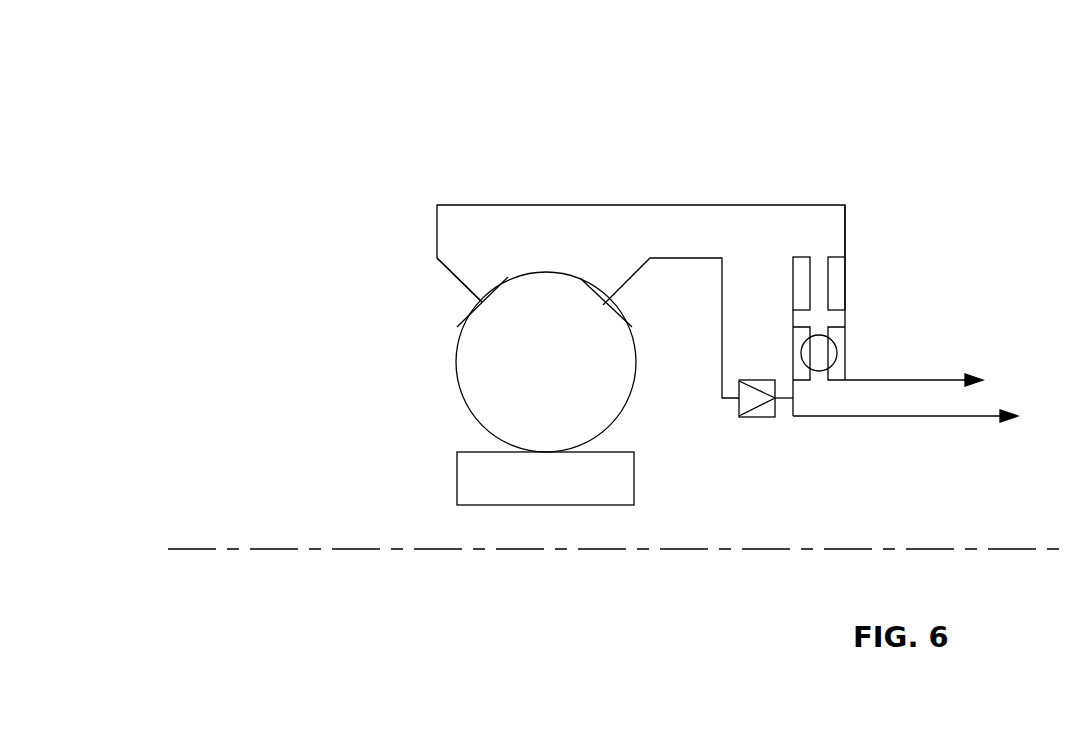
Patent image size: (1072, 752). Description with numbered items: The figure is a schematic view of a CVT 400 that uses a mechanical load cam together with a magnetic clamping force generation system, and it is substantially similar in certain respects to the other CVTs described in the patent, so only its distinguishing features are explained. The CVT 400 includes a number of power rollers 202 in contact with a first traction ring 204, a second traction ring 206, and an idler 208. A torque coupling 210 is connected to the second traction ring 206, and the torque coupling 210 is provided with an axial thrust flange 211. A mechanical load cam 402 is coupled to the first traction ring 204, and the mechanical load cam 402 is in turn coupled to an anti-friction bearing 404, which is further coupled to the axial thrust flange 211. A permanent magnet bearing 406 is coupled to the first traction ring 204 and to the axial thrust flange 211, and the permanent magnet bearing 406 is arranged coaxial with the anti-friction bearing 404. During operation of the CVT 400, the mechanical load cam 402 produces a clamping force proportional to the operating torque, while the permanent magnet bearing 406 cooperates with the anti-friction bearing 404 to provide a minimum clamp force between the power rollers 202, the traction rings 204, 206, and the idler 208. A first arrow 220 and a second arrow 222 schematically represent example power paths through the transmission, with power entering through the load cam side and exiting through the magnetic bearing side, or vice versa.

The CVT 400 is at (321, 127).
The torque coupling 210 is at (543, 205).
The axial thrust flange 211 is at (845, 240).
The second traction ring 206 is at (460, 302).
The power rollers 202 is at (455, 365).
The first traction ring 204 is at (635, 276).
The idler 208 is at (557, 505).
The mechanical load cam 402 is at (753, 418).
The permanent magnet bearing 406 is at (818, 255).
The anti-friction bearing 404 is at (836, 327).
The second arrow 222 is at (945, 380).
The first arrow 220 is at (950, 418).